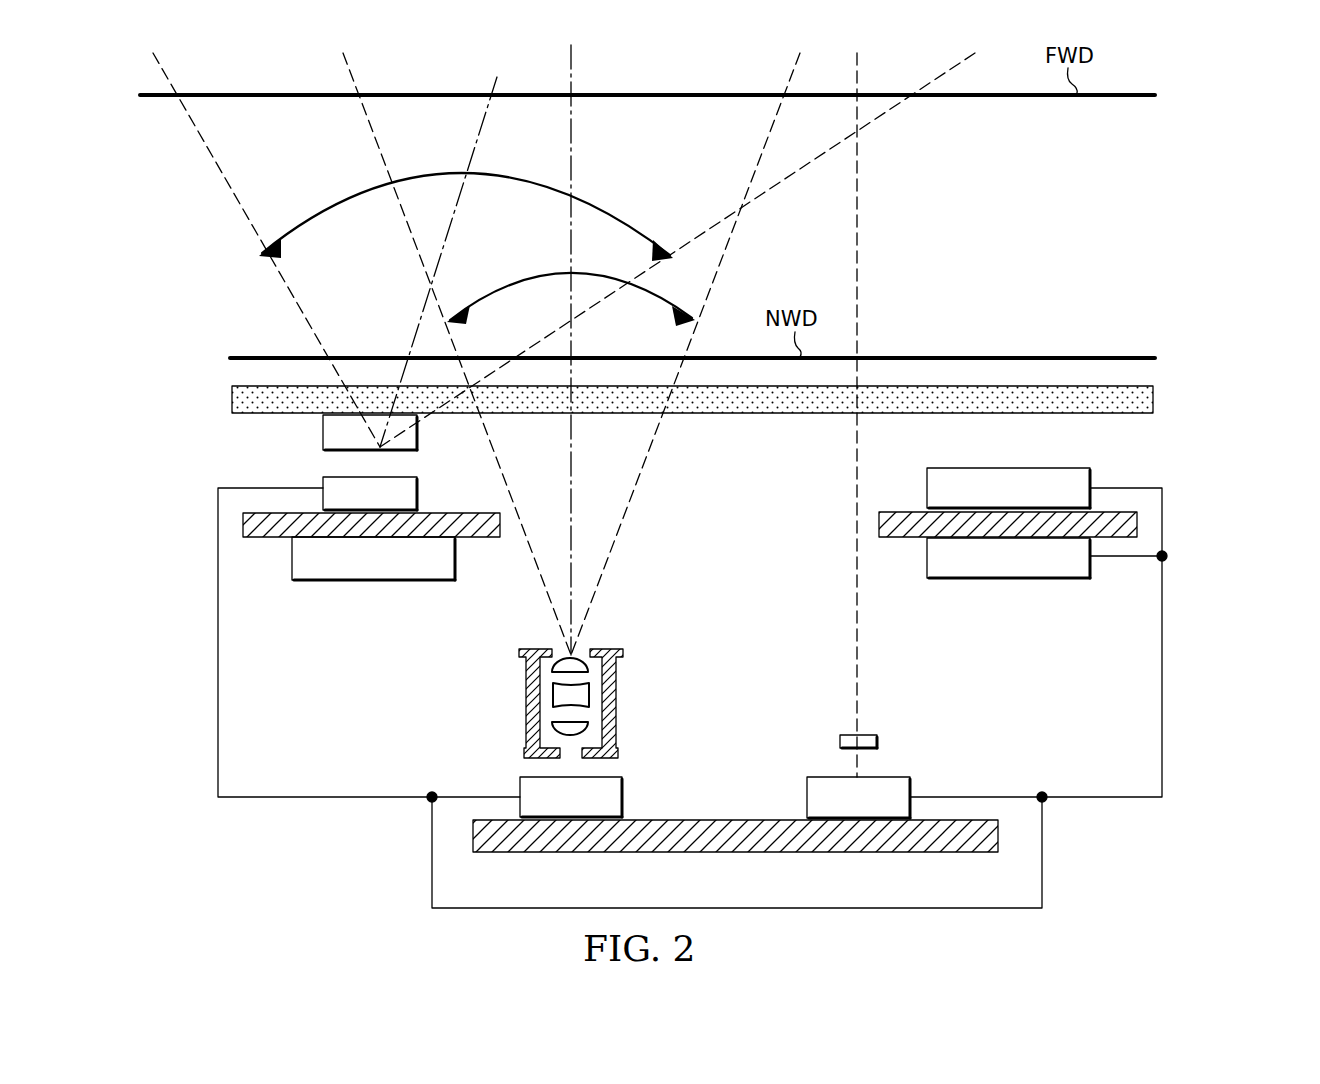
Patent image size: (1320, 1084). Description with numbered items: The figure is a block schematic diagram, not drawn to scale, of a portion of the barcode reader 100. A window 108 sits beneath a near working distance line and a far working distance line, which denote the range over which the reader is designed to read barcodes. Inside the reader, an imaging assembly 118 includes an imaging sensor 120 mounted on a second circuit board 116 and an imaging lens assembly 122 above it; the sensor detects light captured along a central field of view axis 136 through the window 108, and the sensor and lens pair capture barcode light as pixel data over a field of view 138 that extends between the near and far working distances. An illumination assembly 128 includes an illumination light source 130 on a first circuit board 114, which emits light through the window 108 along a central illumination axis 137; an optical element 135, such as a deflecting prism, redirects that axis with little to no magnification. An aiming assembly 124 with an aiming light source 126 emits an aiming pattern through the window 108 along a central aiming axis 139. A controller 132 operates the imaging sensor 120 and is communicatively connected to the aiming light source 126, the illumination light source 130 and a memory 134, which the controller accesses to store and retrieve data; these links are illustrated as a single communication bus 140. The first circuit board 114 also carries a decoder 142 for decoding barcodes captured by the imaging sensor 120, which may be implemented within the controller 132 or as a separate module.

The barcode reader 100 is at (1192, 334).
The window 108 is at (762, 414).
The first circuit board 114 is at (243, 525).
The second circuit board 116 is at (535, 845).
The imaging assembly 118 is at (569, 733).
The imaging sensor 120 is at (622, 792).
The imaging lens assembly 122 is at (655, 694).
The aiming assembly 124 is at (902, 746).
The aiming light source 126 is at (807, 797).
The illumination assembly 128 is at (353, 462).
The illumination light source 130 is at (417, 490).
The controller 132 is at (927, 490).
The memory 134 is at (927, 558).
The optical element 135 is at (417, 445).
The central field of view axis 136 is at (571, 152).
The central illumination axis 137 is at (476, 144).
The field of view 138 is at (528, 284).
The central aiming axis 139 is at (857, 612).
The communication bus 140 is at (1098, 797).
The decoder 142 is at (372, 580).